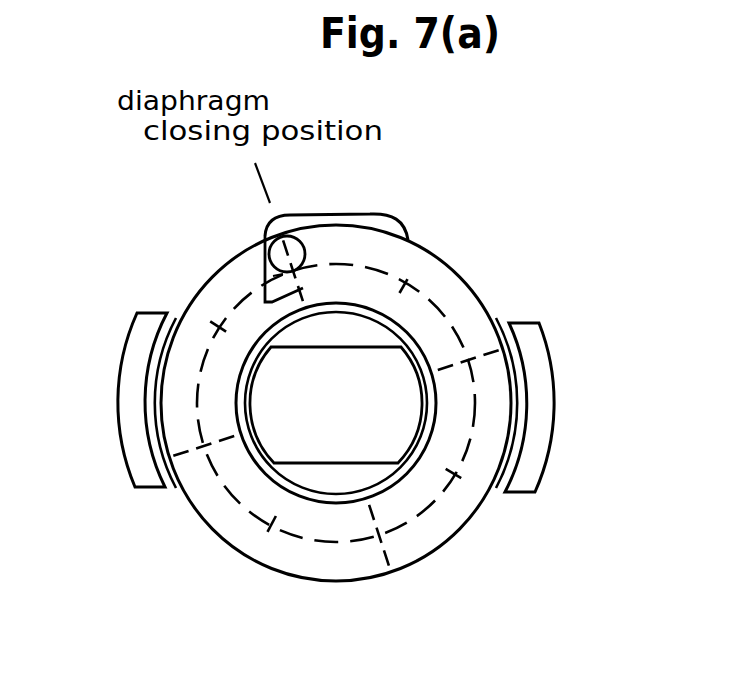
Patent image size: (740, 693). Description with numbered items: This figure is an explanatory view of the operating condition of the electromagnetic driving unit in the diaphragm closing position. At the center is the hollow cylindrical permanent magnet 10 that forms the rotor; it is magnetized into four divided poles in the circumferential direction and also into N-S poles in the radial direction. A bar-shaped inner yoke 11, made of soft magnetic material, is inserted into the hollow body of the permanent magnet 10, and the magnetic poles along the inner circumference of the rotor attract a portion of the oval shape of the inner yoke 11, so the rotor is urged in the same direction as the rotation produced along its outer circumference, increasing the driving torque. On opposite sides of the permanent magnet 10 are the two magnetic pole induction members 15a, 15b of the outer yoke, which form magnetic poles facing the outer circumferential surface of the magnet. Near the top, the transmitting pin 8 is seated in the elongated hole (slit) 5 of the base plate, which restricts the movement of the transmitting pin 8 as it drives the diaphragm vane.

The elongated hole (slit) 5 is at (378, 214).
The transmitting pin 8 is at (268, 252).
The permanent magnet 10 is at (427, 523).
The inner yoke 11 is at (330, 478).
The magnetic pole induction member 15a is at (543, 433).
The magnetic pole induction member 15b is at (135, 457).